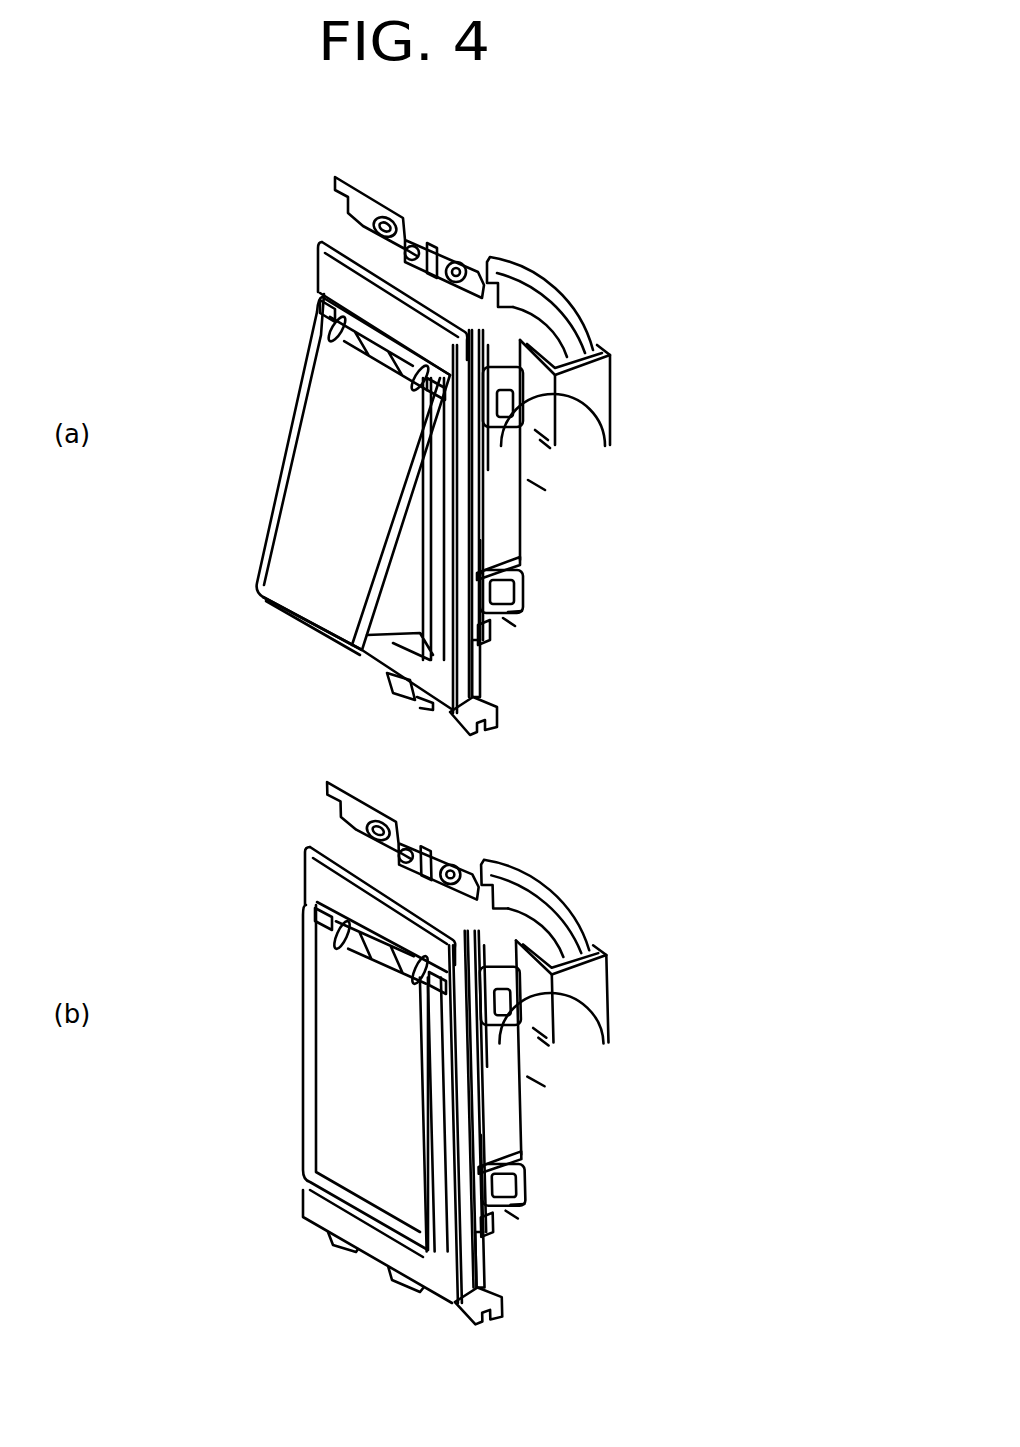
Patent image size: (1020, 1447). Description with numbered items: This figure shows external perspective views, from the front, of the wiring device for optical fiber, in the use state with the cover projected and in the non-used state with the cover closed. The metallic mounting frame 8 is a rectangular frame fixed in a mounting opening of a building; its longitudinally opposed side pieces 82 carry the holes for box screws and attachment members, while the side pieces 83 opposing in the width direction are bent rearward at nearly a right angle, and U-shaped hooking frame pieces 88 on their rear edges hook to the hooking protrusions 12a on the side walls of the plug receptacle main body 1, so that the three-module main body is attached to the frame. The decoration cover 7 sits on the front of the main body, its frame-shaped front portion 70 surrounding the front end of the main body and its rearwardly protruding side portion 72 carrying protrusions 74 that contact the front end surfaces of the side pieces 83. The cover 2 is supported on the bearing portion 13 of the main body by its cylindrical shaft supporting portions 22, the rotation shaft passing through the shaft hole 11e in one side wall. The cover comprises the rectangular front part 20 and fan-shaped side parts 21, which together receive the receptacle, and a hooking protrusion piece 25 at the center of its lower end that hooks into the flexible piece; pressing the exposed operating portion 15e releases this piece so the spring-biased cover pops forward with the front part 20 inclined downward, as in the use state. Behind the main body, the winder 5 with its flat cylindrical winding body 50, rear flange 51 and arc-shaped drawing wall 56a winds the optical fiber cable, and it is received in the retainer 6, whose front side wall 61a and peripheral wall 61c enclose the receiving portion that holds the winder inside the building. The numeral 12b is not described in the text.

The plug receptacle main body 1 is at (300, 410).
The cover 2 is at (335, 487).
The winder 5 is at (572, 300).
The retainer 6 is at (618, 362).
The decoration cover 7 is at (333, 284).
The mounting frame 8 is at (372, 206).
The shaft hole 11e is at (420, 420).
The hooking protrusion 12a is at (538, 488).
The engaging recess 12b is at (523, 404).
The bearing portion 13 is at (366, 357).
The operating portion 15e is at (355, 1214).
The front part 20 is at (297, 563).
The side part 21 is at (393, 593).
The shaft supporting portion 22 is at (333, 325).
The hooking protrusion piece 25 is at (303, 627).
The winding body 50 is at (546, 355).
The flange 51 is at (503, 262).
The drawing wall 56a is at (522, 318).
The front side wall 61a is at (553, 478).
The peripheral wall 61c is at (540, 434).
The front portion 70 is at (320, 1210).
The side portion 72 is at (468, 703).
The protrusion 74 is at (500, 563).
The side piece 82 is at (410, 240).
The side piece 83 is at (483, 640).
The hooking frame piece 88 is at (545, 443).